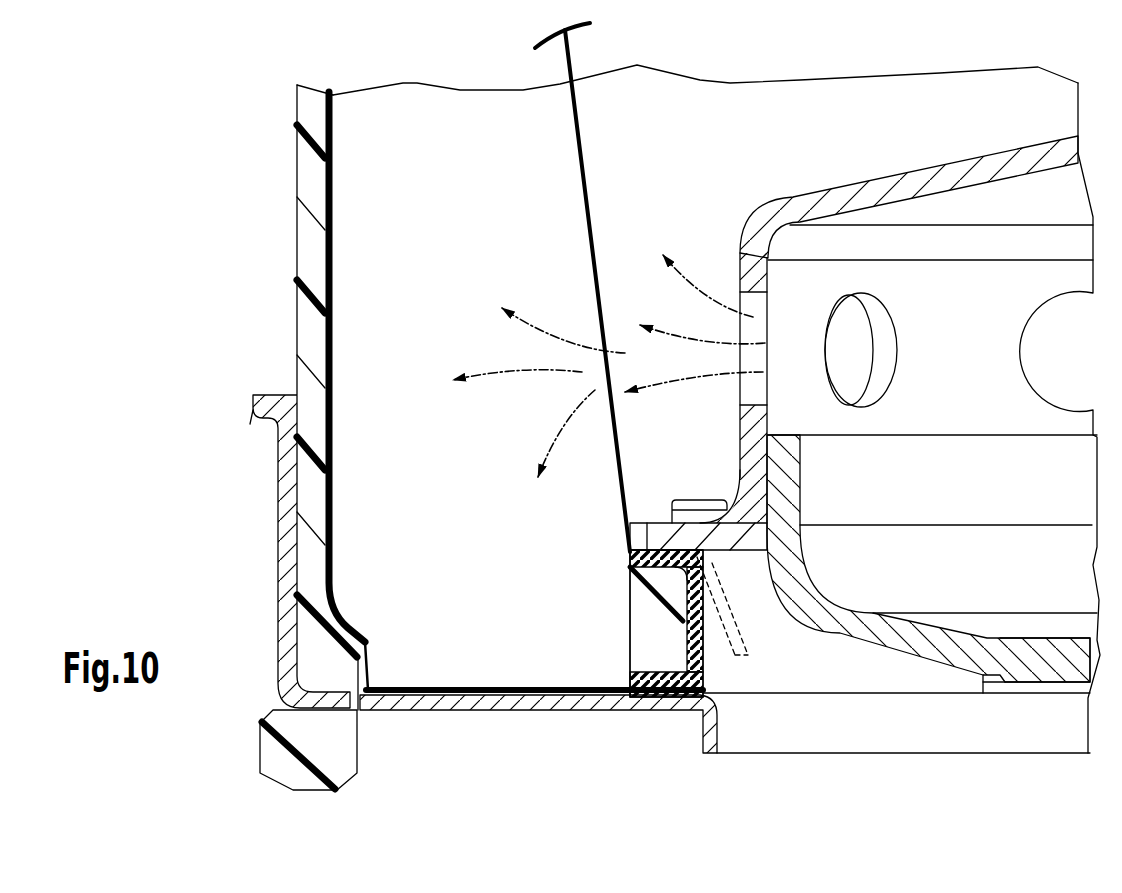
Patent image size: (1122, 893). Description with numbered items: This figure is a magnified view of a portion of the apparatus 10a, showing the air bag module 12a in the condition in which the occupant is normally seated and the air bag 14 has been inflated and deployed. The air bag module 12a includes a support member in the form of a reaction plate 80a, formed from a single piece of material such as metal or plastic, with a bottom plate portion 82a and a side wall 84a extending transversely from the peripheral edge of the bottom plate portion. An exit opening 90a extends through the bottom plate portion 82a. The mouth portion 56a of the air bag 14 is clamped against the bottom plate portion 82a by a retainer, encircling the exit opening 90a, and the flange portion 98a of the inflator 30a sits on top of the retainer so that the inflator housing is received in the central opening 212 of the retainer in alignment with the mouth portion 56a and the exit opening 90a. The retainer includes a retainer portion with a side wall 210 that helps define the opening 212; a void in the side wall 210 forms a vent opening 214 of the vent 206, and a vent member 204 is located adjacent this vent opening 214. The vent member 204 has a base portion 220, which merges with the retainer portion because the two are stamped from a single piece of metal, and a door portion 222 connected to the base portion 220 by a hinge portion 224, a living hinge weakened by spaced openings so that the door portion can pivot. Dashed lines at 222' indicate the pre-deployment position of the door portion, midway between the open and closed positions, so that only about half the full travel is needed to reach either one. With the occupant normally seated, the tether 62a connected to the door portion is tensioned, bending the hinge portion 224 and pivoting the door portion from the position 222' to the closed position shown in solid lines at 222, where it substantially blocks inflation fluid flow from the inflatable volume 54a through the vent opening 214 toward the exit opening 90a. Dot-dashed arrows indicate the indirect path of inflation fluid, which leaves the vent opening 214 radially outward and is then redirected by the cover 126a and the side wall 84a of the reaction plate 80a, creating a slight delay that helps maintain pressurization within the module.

The apparatus 10a is at (408, 122).
The air bag module 12a is at (500, 110).
The air bag 14 is at (337, 607).
The inflator 30a is at (907, 175).
The inflatable volume 54a is at (735, 130).
The mouth portion 56a is at (530, 683).
The tether 62a is at (588, 213).
The reaction plate 80a is at (288, 492).
The bottom plate portion 82a is at (437, 705).
The side wall 84a is at (288, 535).
The exit opening 90a is at (833, 723).
The flange portion 98a is at (663, 537).
The cover 126a is at (315, 428).
The vent member 204 is at (705, 602).
The vent 206 is at (623, 600).
The side wall 210 is at (927, 673).
The central opening 212 is at (880, 682).
The vent opening 214 is at (562, 598).
The base portion 220 is at (645, 523).
The door portion 222 is at (900, 601).
The door portion in pre-deployment position 222' is at (766, 685).
The hinge portion 224 is at (698, 560).